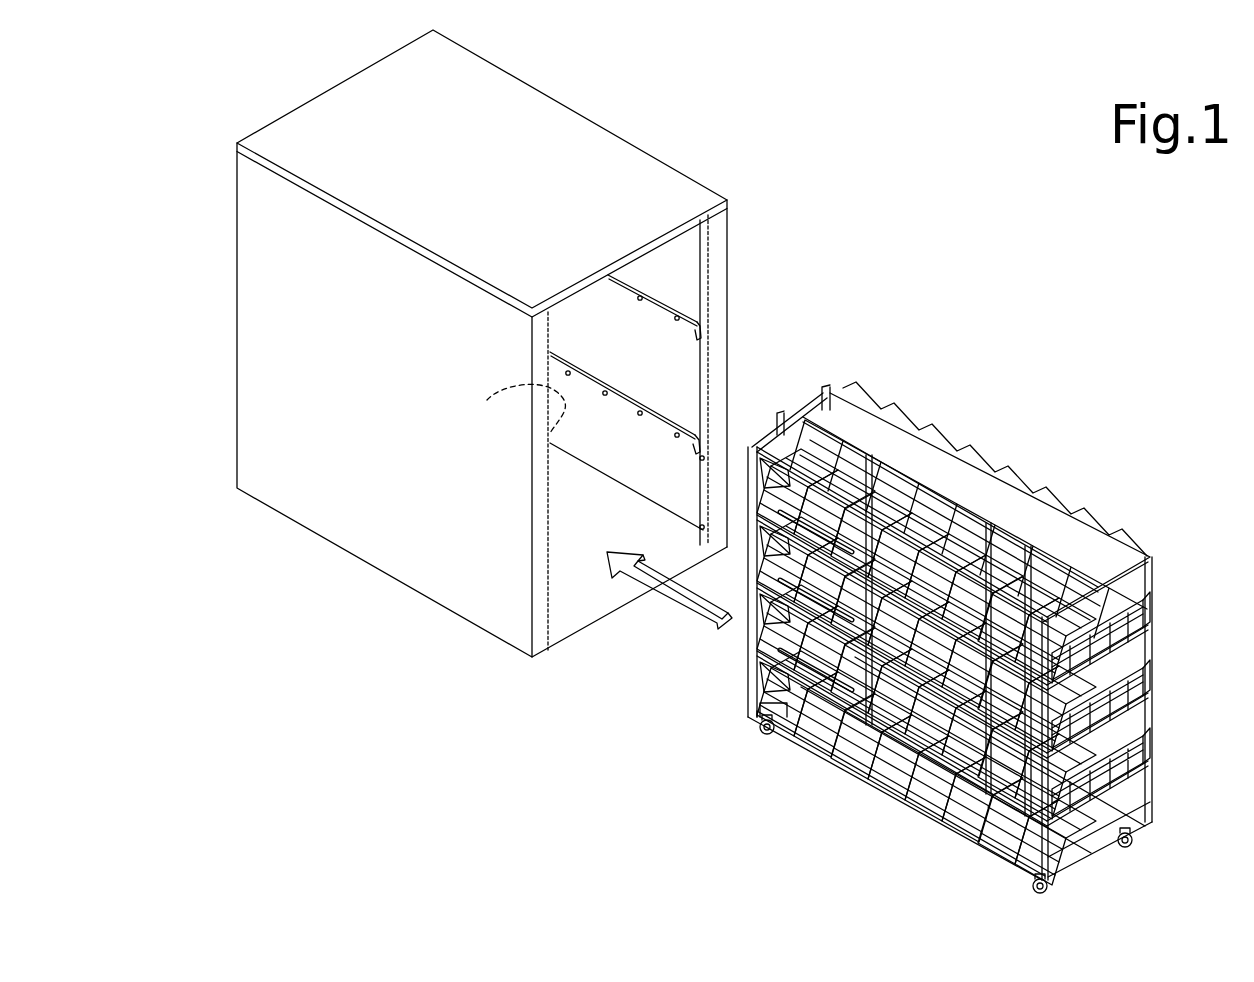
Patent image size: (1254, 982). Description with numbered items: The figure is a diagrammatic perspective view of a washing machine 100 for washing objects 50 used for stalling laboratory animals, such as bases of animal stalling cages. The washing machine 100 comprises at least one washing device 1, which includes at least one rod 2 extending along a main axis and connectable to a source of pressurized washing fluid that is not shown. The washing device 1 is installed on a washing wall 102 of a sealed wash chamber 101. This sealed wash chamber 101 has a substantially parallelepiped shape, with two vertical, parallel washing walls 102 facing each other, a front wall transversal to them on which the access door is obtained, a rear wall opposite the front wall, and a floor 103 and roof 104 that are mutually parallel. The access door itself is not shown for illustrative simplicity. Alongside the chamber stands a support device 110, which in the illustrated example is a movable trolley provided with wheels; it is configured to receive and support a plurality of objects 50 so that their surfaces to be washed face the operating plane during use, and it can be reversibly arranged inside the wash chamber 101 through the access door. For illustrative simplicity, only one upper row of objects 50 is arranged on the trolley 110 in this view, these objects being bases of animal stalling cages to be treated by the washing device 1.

The washing device 1 is at (890, 181).
The washing machine 100 is at (195, 122).
The sealed wash chamber 101 is at (573, 597).
The washing wall 102 is at (657, 353).
The floor 103 is at (606, 601).
The roof 104 is at (583, 152).
The rod 2 is at (668, 413).
The objects 50 is at (995, 466).
The support device 110 is at (1105, 492).